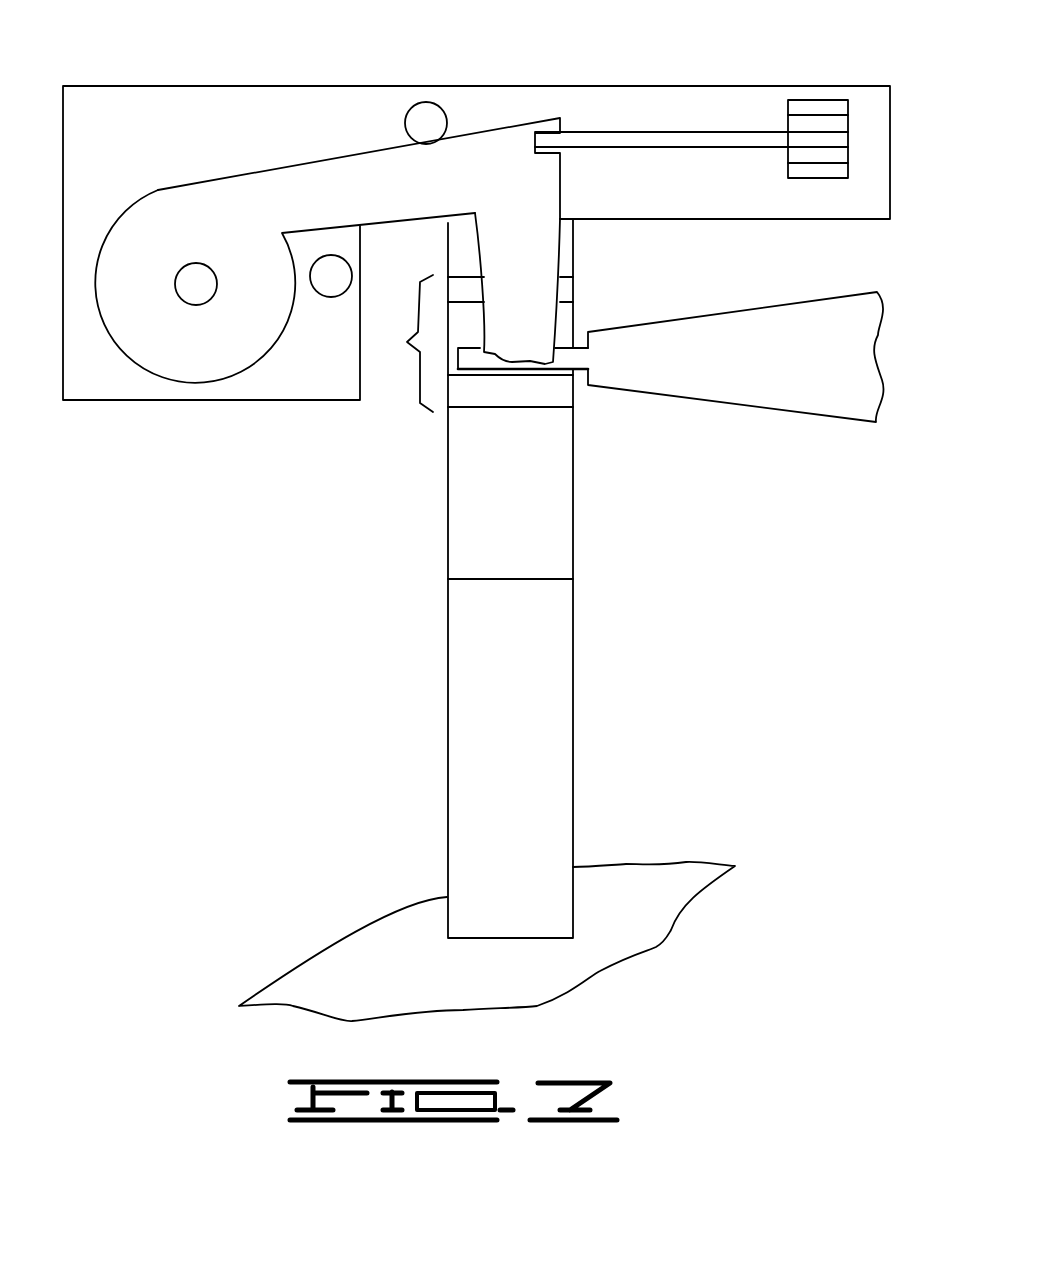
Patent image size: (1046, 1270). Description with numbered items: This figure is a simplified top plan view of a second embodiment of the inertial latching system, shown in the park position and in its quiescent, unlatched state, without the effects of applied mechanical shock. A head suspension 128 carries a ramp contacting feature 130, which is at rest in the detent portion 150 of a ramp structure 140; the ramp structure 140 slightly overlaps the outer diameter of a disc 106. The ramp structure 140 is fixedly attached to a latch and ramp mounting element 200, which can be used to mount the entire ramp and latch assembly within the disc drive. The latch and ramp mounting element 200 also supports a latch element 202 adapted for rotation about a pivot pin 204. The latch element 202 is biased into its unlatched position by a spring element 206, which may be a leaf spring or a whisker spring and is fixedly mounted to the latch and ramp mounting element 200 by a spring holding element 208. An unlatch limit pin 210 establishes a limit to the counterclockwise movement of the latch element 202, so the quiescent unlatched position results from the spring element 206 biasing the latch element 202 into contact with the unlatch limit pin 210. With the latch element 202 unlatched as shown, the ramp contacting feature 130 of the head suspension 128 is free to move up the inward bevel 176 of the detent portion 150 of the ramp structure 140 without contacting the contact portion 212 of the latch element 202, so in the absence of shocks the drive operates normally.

The latch and ramp mounting element 200 is at (195, 98).
The latch element 202 is at (185, 217).
The pivot pin 204 is at (193, 287).
The spring element 206 is at (645, 140).
The spring holding element 208 is at (815, 122).
The unlatch limit pin 210 is at (425, 117).
The contact portion 212 is at (533, 237).
The head suspension 128 is at (763, 390).
The ramp contacting feature 130 is at (483, 362).
The ramp structure 140 is at (521, 753).
The detent portion 150 is at (407, 342).
The inward bevel 176 is at (482, 393).
The disc 106 is at (373, 923).